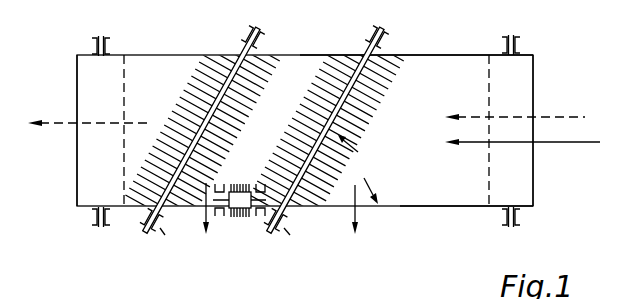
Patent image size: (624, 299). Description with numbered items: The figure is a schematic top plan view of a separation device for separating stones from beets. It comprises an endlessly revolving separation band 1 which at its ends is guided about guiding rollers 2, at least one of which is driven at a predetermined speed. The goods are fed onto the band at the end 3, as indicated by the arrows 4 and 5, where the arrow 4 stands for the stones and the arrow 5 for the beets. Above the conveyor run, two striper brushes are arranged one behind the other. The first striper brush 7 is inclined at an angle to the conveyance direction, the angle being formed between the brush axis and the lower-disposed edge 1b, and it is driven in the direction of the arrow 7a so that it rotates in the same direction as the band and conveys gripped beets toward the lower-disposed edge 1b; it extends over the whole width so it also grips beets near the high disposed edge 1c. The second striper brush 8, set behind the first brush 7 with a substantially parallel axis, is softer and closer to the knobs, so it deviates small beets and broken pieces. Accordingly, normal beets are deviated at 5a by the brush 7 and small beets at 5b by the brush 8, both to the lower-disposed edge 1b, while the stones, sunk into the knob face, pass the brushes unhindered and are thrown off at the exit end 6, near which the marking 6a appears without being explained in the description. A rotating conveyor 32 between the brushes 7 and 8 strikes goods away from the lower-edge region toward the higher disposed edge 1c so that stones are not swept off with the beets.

The separation band 1 is at (447, 204).
The lower-disposed edge 1b is at (478, 207).
The high disposed edge 1c is at (421, 56).
The guiding rollers 2 is at (112, 46).
The end 3 is at (542, 84).
The arrow 4 is at (62, 123).
The arrow 5 is at (575, 143).
The arrow 5a is at (357, 236).
The arrow 5b is at (201, 218).
The exit end 6 is at (70, 182).
The outlet region 6a is at (170, 240).
The first striper brush 7 is at (353, 50).
The arrow 7a is at (294, 240).
The second striper brush 8 is at (233, 48).
The rotating conveyor 32 is at (237, 188).